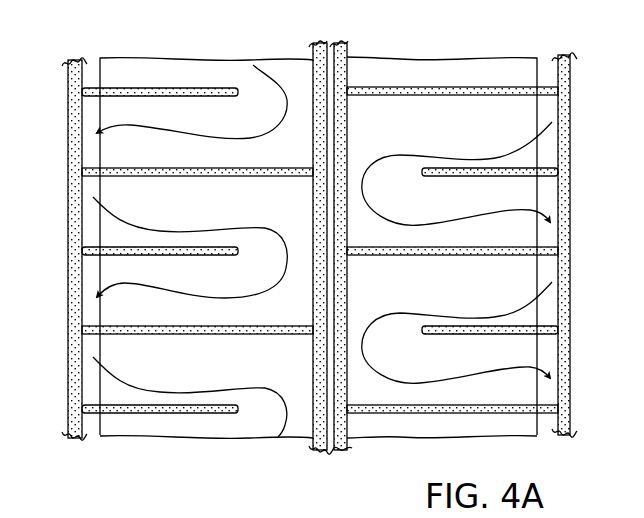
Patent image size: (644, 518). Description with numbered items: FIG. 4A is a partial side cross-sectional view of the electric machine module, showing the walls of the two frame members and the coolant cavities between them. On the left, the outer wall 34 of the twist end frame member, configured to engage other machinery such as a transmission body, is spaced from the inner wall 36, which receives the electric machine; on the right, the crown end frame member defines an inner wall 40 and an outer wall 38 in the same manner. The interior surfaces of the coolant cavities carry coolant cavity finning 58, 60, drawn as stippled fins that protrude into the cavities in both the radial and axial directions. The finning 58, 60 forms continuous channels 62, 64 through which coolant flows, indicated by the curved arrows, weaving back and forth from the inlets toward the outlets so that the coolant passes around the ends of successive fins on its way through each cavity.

The outer wall 34 is at (67, 114).
The inner wall 36 is at (312, 72).
The outer wall 38 is at (563, 107).
The inner wall 40 is at (348, 72).
The coolant cavity finning 58 is at (233, 167).
The coolant cavity finning 60 is at (422, 95).
The continuous channel 62 is at (168, 67).
The continuous channel 64 is at (447, 73).